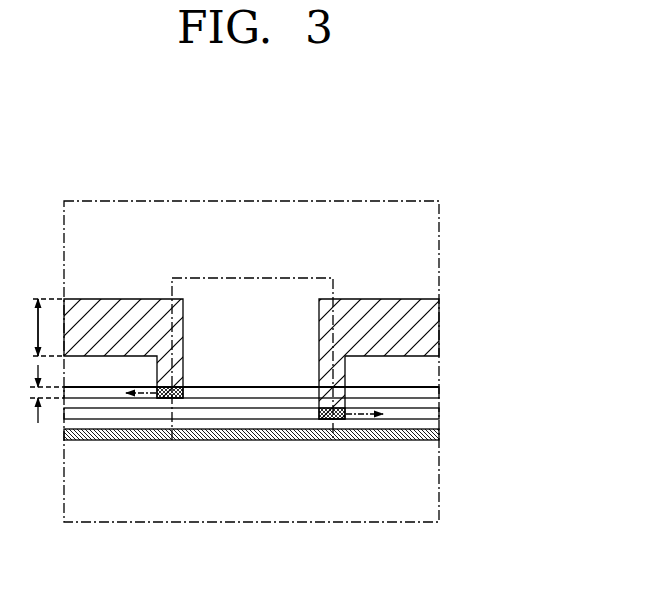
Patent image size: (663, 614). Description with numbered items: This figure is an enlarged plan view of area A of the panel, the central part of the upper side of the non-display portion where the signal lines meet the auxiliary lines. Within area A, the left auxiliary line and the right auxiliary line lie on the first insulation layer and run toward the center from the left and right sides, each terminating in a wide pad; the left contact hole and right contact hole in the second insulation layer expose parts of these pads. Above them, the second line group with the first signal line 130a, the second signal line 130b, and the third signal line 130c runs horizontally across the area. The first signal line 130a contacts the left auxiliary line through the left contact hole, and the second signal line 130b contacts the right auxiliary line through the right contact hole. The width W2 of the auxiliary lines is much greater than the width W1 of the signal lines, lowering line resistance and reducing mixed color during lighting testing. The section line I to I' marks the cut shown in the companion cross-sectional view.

The area A is at (476, 197).
The first signal line 130a is at (430, 395).
The second signal line 130b is at (430, 415).
The third signal line 130c is at (432, 436).
The width of the first signal line and/or second signal line W1 is at (33, 394).
The width of the auxiliary lines W2 is at (33, 327).
The current direction (left) I is at (141, 376).
The current direction (right) I' is at (364, 389).